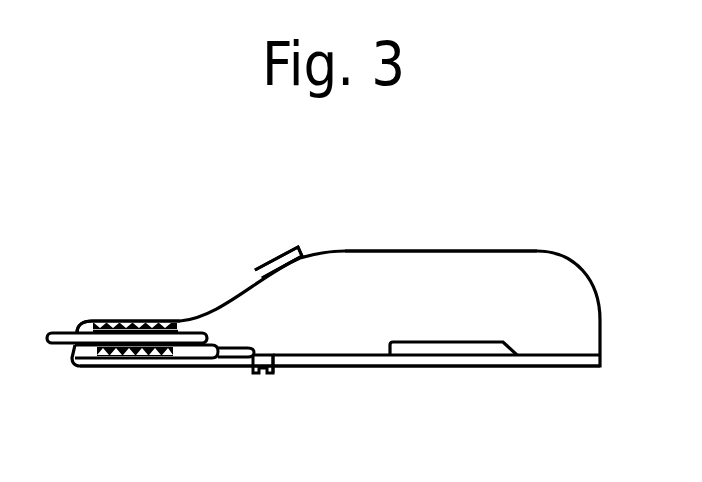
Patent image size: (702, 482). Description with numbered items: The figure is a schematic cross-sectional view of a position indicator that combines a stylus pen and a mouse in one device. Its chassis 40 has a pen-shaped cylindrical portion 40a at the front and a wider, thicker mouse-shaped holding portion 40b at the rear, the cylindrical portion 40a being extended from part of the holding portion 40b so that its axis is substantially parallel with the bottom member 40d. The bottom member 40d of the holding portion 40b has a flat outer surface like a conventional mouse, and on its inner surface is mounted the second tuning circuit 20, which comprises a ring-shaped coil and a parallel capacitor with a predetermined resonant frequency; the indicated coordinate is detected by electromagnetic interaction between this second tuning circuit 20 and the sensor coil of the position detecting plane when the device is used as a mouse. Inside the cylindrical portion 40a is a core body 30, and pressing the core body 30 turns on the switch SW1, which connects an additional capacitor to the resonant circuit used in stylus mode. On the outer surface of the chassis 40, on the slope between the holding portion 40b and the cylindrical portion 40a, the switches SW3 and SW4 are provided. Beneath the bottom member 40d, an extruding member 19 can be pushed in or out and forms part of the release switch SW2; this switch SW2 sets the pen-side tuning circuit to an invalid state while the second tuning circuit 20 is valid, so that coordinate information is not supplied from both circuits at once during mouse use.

The extruding member 19 is at (273, 365).
The second tuning circuit 20 is at (511, 354).
The core body 30 is at (62, 331).
The chassis 40 is at (533, 251).
The cylindrical portion 40a is at (139, 322).
The holding portion 40b is at (443, 251).
The bottom member 40d is at (357, 355).
The switch SW1 is at (212, 362).
The release switch SW2 is at (263, 375).
The switch SW3 is at (285, 247).
The switch SW4 is at (285, 247).